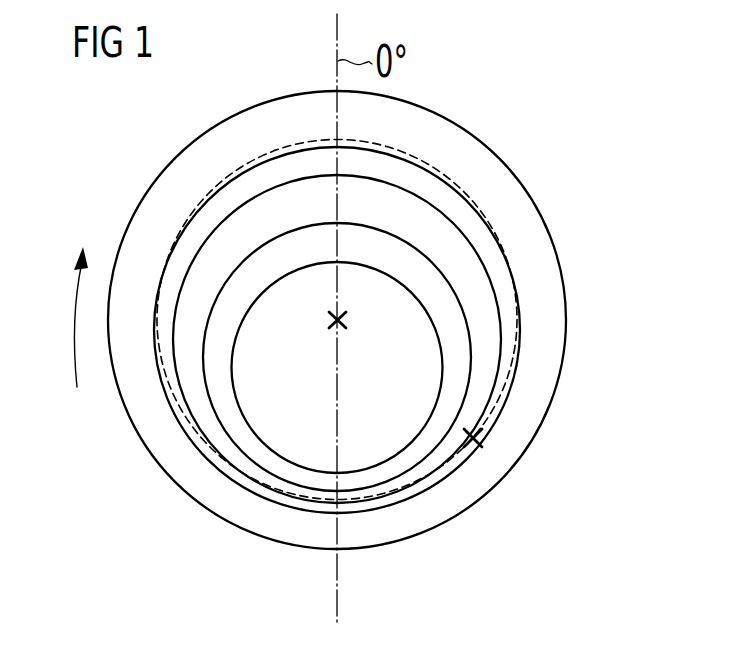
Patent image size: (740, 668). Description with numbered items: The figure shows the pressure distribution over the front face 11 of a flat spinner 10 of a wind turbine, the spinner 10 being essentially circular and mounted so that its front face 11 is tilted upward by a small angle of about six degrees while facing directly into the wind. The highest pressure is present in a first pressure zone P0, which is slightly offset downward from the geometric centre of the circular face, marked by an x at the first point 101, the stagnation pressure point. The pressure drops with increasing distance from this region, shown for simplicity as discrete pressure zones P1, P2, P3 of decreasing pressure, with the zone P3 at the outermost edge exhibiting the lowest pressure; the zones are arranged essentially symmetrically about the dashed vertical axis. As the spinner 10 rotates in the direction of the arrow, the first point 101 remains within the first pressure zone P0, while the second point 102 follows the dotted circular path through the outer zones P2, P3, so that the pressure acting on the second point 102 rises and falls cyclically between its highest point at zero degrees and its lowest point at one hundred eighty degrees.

The flat spinner 10 is at (215, 125).
The front face 11 is at (288, 107).
The first point 101 is at (328, 315).
The second point 102 is at (475, 449).
The first pressure zone P0 is at (398, 375).
The pressure zone P1 is at (452, 372).
The pressure zone P2 is at (484, 339).
The pressure zone P3 is at (493, 262).